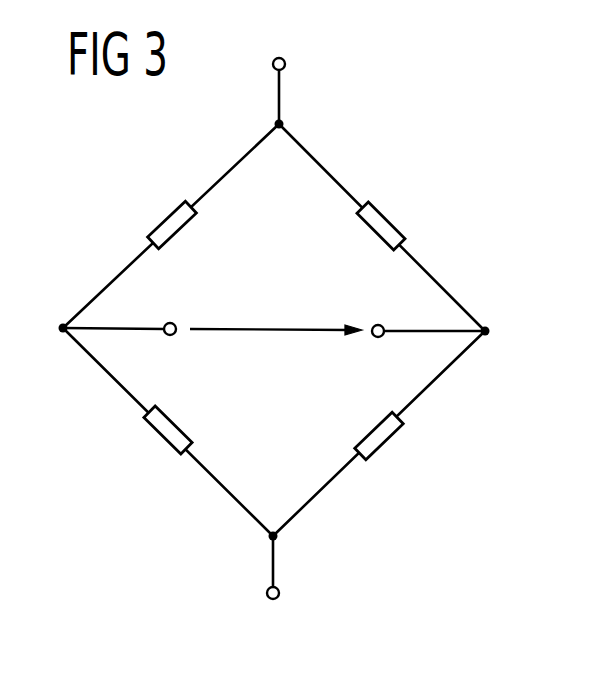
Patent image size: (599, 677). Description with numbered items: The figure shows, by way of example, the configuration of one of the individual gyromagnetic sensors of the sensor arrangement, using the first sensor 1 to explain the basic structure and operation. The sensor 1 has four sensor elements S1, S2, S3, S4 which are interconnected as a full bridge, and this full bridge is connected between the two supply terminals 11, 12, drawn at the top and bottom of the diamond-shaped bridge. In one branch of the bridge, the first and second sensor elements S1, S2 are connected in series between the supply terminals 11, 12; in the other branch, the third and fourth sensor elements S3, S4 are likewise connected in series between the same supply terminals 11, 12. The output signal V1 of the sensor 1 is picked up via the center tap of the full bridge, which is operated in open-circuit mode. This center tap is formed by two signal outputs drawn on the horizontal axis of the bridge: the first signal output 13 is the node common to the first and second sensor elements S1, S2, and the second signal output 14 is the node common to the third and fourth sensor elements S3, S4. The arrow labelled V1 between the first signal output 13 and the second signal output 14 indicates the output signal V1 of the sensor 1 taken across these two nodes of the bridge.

The first sensor 1 is at (468, 149).
The supply terminal 11 is at (286, 64).
The supply terminal 12 is at (279, 592).
The first signal output 13 is at (171, 322).
The second signal output 14 is at (378, 324).
The first sensor element S1 is at (166, 219).
The second sensor element S2 is at (160, 440).
The third sensor element S3 is at (388, 218).
The fourth sensor element S4 is at (383, 445).
The output signal V1 is at (276, 314).